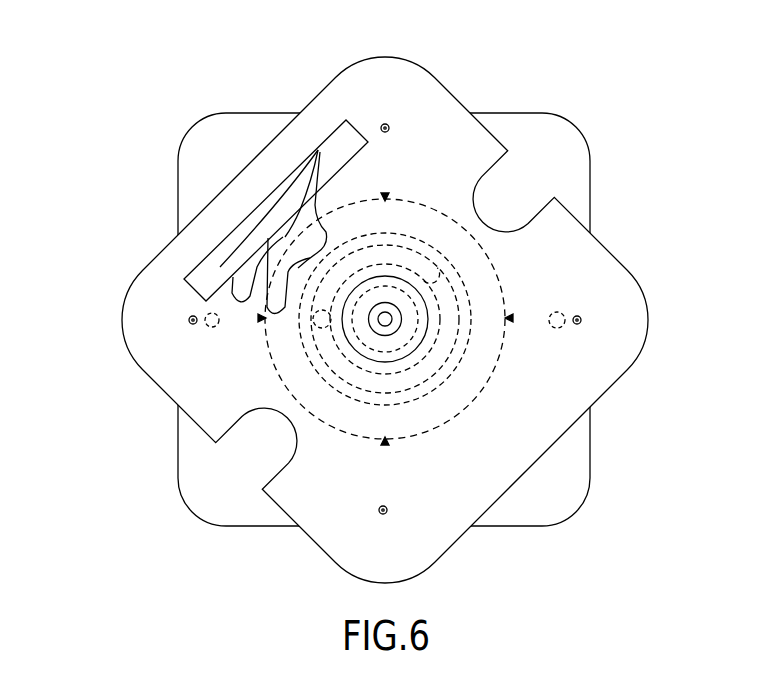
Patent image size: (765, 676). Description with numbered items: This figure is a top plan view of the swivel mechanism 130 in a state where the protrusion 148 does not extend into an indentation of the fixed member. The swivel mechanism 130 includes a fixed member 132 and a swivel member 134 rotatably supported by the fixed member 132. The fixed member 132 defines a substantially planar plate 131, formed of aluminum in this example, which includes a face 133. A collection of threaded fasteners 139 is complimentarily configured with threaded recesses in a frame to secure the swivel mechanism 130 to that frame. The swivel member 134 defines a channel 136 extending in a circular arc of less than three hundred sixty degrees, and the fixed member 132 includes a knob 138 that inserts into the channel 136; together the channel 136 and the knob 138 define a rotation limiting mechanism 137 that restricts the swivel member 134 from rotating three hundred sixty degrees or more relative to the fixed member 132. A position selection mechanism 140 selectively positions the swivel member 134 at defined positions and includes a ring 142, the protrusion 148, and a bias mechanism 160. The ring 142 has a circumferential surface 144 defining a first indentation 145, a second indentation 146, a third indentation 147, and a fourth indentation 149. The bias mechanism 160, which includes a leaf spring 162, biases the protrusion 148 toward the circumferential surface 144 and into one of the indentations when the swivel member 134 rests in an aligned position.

The swivel mechanism 130 is at (92, 158).
The substantially planar plate 131 is at (582, 222).
The fixed member 132 is at (612, 118).
The face 133 is at (582, 186).
The swivel member 134 is at (429, 50).
The channel 136 is at (338, 370).
The rotation limiting mechanism 137 is at (327, 380).
The knob 138 is at (320, 326).
The threaded fasteners 139 is at (390, 129).
The position selection mechanism 140 is at (214, 267).
The ring 142 is at (488, 265).
The circumferential surface 144 is at (483, 384).
The first indentation 145 is at (385, 193).
The second indentation 146 is at (513, 318).
The third indentation 147 is at (385, 445).
The protrusion 148 is at (322, 228).
The fourth indentation 149 is at (258, 318).
The bias mechanism 160 is at (273, 201).
The leaf spring 162 is at (312, 154).